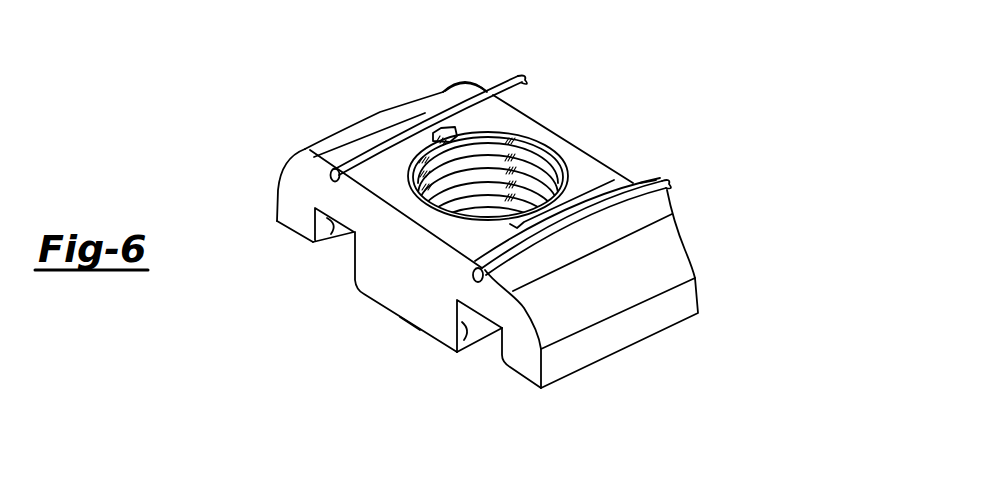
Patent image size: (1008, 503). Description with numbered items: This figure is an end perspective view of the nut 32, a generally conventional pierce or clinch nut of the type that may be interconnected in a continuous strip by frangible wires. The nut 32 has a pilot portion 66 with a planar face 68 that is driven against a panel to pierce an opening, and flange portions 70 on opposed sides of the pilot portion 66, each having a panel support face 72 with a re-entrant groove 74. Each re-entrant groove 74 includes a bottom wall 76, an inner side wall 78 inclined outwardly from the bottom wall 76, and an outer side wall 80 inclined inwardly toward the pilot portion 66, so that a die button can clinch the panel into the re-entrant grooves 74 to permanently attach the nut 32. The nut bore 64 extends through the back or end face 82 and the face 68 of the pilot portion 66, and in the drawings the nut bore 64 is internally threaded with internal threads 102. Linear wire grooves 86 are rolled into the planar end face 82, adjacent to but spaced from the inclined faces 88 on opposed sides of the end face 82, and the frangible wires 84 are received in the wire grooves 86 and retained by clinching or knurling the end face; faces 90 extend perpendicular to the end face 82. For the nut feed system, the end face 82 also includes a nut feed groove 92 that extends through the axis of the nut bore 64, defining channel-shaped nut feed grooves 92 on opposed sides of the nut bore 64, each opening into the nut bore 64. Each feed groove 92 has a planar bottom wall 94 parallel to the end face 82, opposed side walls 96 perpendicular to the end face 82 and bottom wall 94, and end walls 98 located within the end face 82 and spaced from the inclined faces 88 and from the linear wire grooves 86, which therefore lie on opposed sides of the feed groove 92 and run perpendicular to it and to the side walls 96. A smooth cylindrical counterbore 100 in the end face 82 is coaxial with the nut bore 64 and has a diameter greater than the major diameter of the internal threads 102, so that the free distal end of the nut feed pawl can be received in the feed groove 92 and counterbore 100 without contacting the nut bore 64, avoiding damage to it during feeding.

The nut 32 is at (309, 97).
The nut bore 64 is at (535, 156).
The pilot portion 66 is at (362, 300).
The planar face 68 is at (410, 334).
The flange portions 70 is at (287, 205).
The panel support face 72 is at (293, 234).
The re-entrant grooves 74 is at (477, 350).
The bottom wall 76 is at (356, 236).
The inner side wall 78 is at (456, 351).
The outer side wall 80 is at (331, 235).
The end face 82 is at (373, 163).
The frangible wires 84 is at (518, 77).
The linear wire grooves 86 is at (488, 90).
The inclined faces 88 is at (677, 242).
The faces perpendicular to the end face 90 is at (657, 320).
The nut feed groove 92 is at (616, 212).
The bottom wall 94 is at (372, 132).
The side walls 96 is at (450, 138).
The end walls 98 is at (430, 142).
The counterbore 100 is at (503, 130).
The internal threads 102 is at (557, 205).